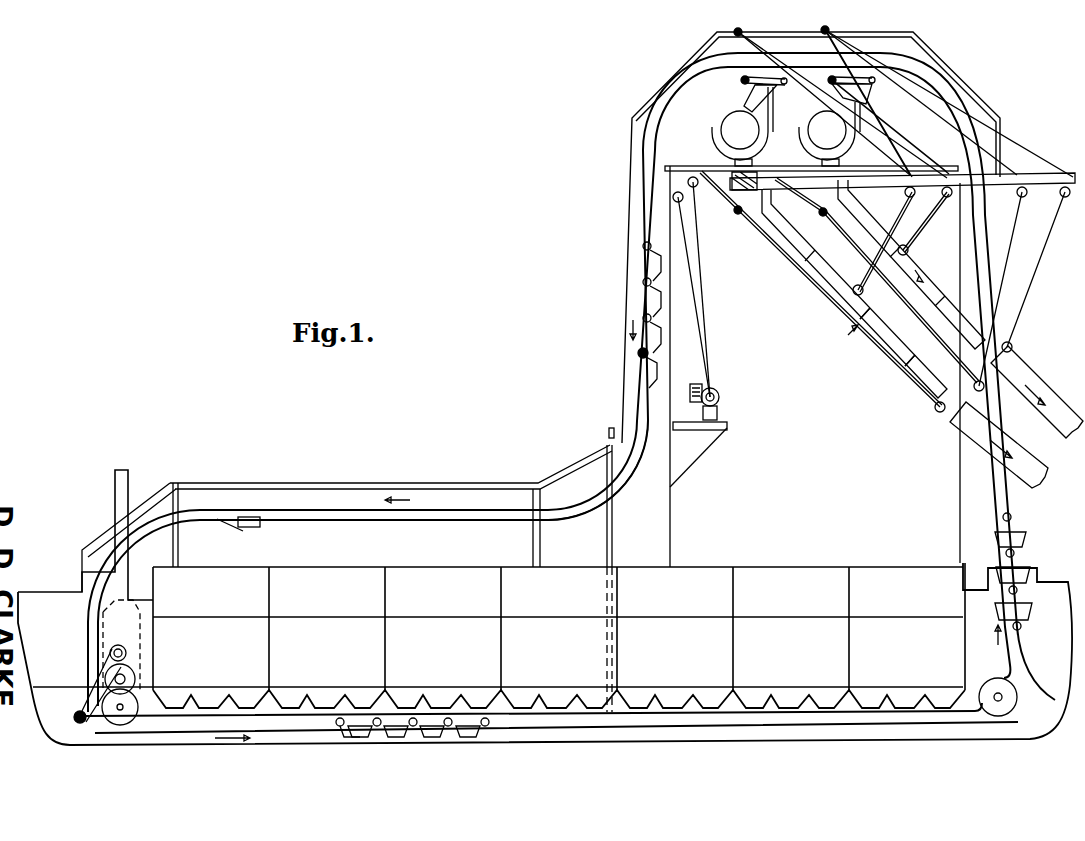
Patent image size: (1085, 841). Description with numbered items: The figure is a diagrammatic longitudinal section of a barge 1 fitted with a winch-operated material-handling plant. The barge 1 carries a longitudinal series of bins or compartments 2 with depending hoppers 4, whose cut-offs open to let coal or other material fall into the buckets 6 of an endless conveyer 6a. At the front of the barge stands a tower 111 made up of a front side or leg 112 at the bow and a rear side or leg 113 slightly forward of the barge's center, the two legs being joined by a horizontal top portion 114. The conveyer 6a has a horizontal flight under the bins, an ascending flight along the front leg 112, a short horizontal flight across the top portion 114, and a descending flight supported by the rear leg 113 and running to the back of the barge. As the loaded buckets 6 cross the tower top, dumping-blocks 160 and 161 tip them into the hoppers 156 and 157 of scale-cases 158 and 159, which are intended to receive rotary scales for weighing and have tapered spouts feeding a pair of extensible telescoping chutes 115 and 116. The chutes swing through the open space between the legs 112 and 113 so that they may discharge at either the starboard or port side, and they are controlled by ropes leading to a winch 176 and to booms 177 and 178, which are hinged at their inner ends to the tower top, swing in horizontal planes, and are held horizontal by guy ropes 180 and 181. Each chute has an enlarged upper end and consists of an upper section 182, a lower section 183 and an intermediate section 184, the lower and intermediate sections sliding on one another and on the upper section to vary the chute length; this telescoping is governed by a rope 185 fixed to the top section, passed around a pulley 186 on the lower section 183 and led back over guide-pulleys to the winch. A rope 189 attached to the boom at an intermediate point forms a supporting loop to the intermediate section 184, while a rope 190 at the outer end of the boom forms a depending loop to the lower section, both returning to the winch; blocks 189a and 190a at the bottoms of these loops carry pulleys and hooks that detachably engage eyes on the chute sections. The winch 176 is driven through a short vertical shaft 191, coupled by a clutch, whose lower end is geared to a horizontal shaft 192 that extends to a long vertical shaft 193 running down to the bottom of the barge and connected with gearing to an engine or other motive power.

The barge 1 is at (545, 607).
The bins or compartments 2 is at (559, 626).
The depending hoppers 4 is at (928, 710).
The buckets 6 is at (655, 268).
The endless conveyer 6a is at (642, 356).
The tower 111 is at (957, 455).
The front side or leg of tower 112 is at (1020, 493).
The rear side or leg of tower 113 is at (628, 240).
The horizontal top portion 114 is at (787, 170).
The extensible telescoping chute 115 is at (917, 280).
The extensible telescoping chute 116 is at (846, 318).
The hopper of scale-case 156 is at (858, 104).
The hopper of scale-case 157 is at (742, 98).
The scale-case 158 is at (829, 134).
The scale-case 159 is at (742, 126).
The dumping-block 160 is at (873, 82).
The dumping-block 161 is at (741, 80).
The winch 176 is at (721, 402).
The boom 177 is at (1044, 168).
The boom 178 is at (1012, 156).
The guy rope or cable 180 is at (928, 135).
The guy rope or cable 181 is at (880, 120).
The upper section of chute 182 is at (857, 222).
The lower section of chute 183 is at (1030, 382).
The intermediate section of chute 184 is at (888, 305).
The rope or line 185 is at (700, 300).
The pulley 186 is at (935, 408).
The rope or line 189 is at (880, 224).
The block 189a is at (864, 291).
The rope or line 190 is at (1030, 205).
The block 190a is at (1012, 345).
The vertical shaft 191 is at (726, 430).
The horizontal shaft 192 is at (655, 442).
The long vertical shaft 193 is at (613, 522).